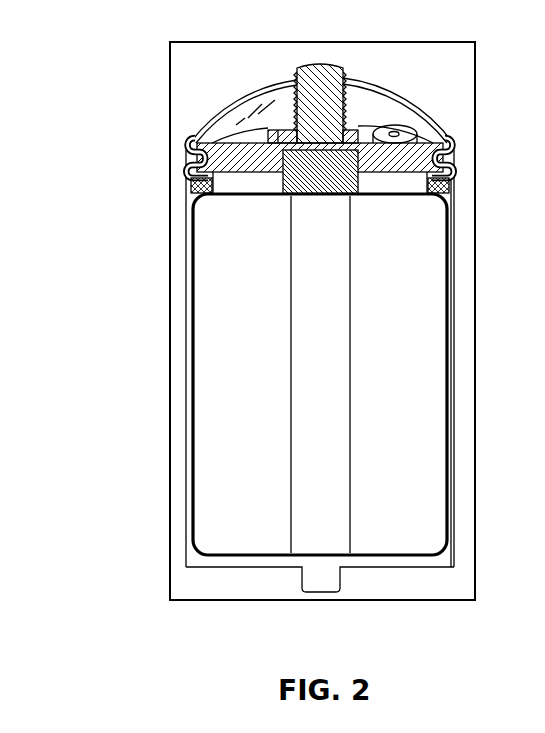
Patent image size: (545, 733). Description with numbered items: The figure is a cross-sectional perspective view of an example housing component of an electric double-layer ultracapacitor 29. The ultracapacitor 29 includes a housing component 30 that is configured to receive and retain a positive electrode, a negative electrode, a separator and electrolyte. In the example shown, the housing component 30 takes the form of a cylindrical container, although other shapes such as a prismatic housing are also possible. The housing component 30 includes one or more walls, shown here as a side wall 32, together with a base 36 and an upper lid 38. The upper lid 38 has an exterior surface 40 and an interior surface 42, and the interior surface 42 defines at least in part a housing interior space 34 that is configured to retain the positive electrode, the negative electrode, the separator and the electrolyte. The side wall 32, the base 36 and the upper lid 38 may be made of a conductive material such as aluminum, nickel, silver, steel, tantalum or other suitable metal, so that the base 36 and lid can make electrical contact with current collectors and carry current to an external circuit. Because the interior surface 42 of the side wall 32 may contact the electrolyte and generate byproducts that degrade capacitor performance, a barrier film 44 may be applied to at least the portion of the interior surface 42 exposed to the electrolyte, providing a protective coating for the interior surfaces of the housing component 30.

The electric double-layer ultracapacitor 29 is at (170, 37).
The housing component 30 is at (179, 247).
The side wall 32 is at (184, 355).
The housing interior space 34 is at (423, 312).
The base 36 is at (198, 560).
The upper lid 38 is at (190, 150).
The exterior surface 40 is at (170, 402).
The interior surface 42 is at (190, 425).
The barrier film 44 is at (447, 378).